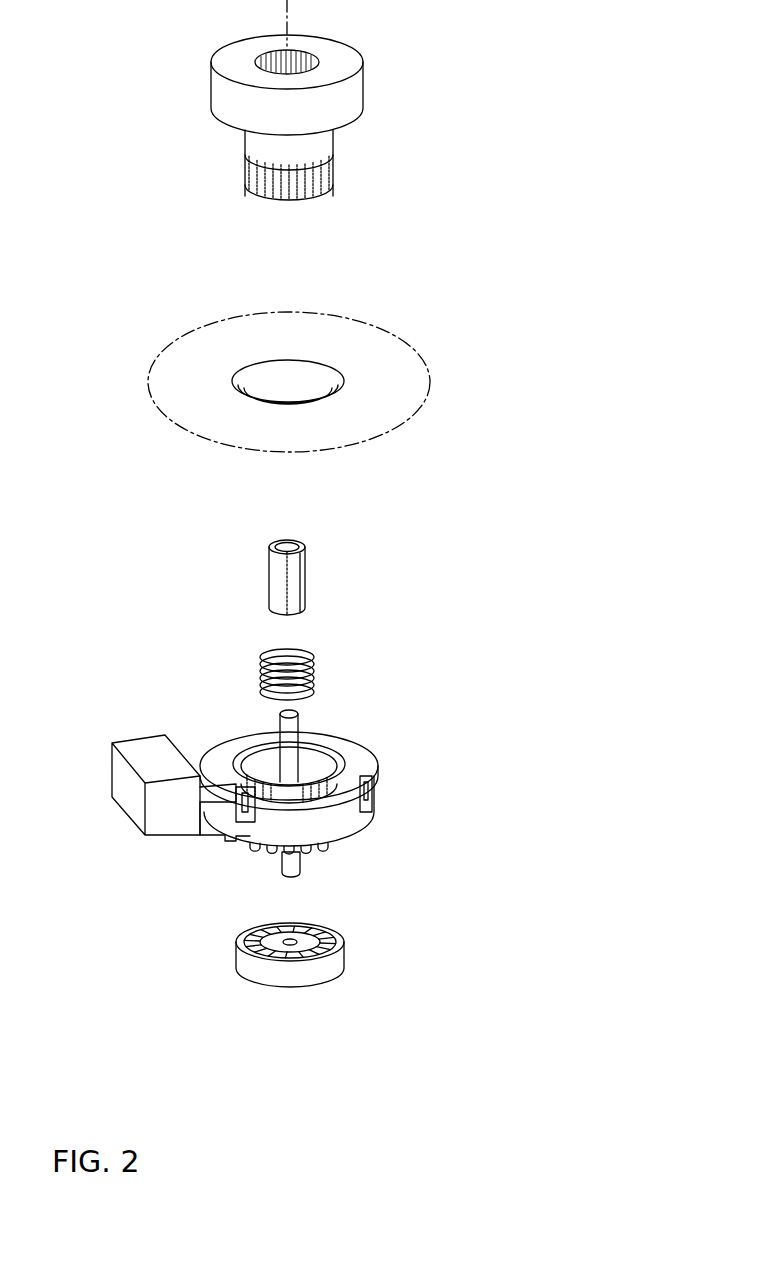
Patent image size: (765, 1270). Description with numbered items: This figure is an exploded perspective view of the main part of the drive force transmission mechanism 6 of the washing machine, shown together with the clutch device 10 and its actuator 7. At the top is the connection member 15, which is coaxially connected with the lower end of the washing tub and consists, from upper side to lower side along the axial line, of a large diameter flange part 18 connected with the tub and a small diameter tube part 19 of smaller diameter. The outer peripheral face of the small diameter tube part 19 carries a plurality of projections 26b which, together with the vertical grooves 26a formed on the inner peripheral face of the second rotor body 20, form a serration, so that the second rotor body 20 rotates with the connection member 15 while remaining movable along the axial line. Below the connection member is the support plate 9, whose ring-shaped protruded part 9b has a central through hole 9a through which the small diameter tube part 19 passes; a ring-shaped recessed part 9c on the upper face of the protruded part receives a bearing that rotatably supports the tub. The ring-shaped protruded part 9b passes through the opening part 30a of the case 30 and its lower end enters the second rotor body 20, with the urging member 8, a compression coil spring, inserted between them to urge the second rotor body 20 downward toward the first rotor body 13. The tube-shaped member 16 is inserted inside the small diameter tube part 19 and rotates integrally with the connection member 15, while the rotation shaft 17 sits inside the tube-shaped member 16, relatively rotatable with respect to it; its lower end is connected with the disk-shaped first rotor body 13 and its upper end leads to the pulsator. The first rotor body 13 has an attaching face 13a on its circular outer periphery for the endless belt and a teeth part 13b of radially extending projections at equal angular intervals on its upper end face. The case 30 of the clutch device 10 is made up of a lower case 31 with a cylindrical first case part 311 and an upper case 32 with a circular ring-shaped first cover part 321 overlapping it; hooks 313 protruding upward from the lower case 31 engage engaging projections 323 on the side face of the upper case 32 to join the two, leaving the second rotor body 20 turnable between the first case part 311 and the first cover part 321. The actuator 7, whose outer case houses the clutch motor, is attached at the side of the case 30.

The connection member 15 is at (366, 117).
The large diameter flange part 18 is at (353, 100).
The small diameter tube part 19 is at (312, 155).
The projections 26b is at (327, 190).
The drive force transmission mechanism 6 is at (566, 318).
The support plate 9 is at (328, 367).
The through hole 9a is at (313, 381).
The ring-shaped protruded part 9b is at (343, 380).
The ring-shaped recessed part 9c is at (251, 373).
The clutch device 10 is at (452, 922).
The tube-shaped member 16 is at (303, 580).
The urging member 8 is at (313, 662).
The rotation shaft 17 is at (297, 723).
The second rotor body 20 is at (317, 763).
The vertical grooves 26a is at (262, 768).
The case 30 is at (110, 630).
The opening part 30a is at (340, 756).
The upper case 32 is at (282, 727).
The lower case 31 is at (285, 777).
The hooks 313 is at (369, 781).
The engaging projections 323 is at (366, 790).
The first cover part 321 is at (322, 787).
The first case part 311 is at (295, 820).
The actuator 7 is at (168, 825).
The first rotor body 13 is at (322, 965).
The attaching face 13a is at (275, 978).
The teeth part 13b is at (325, 930).